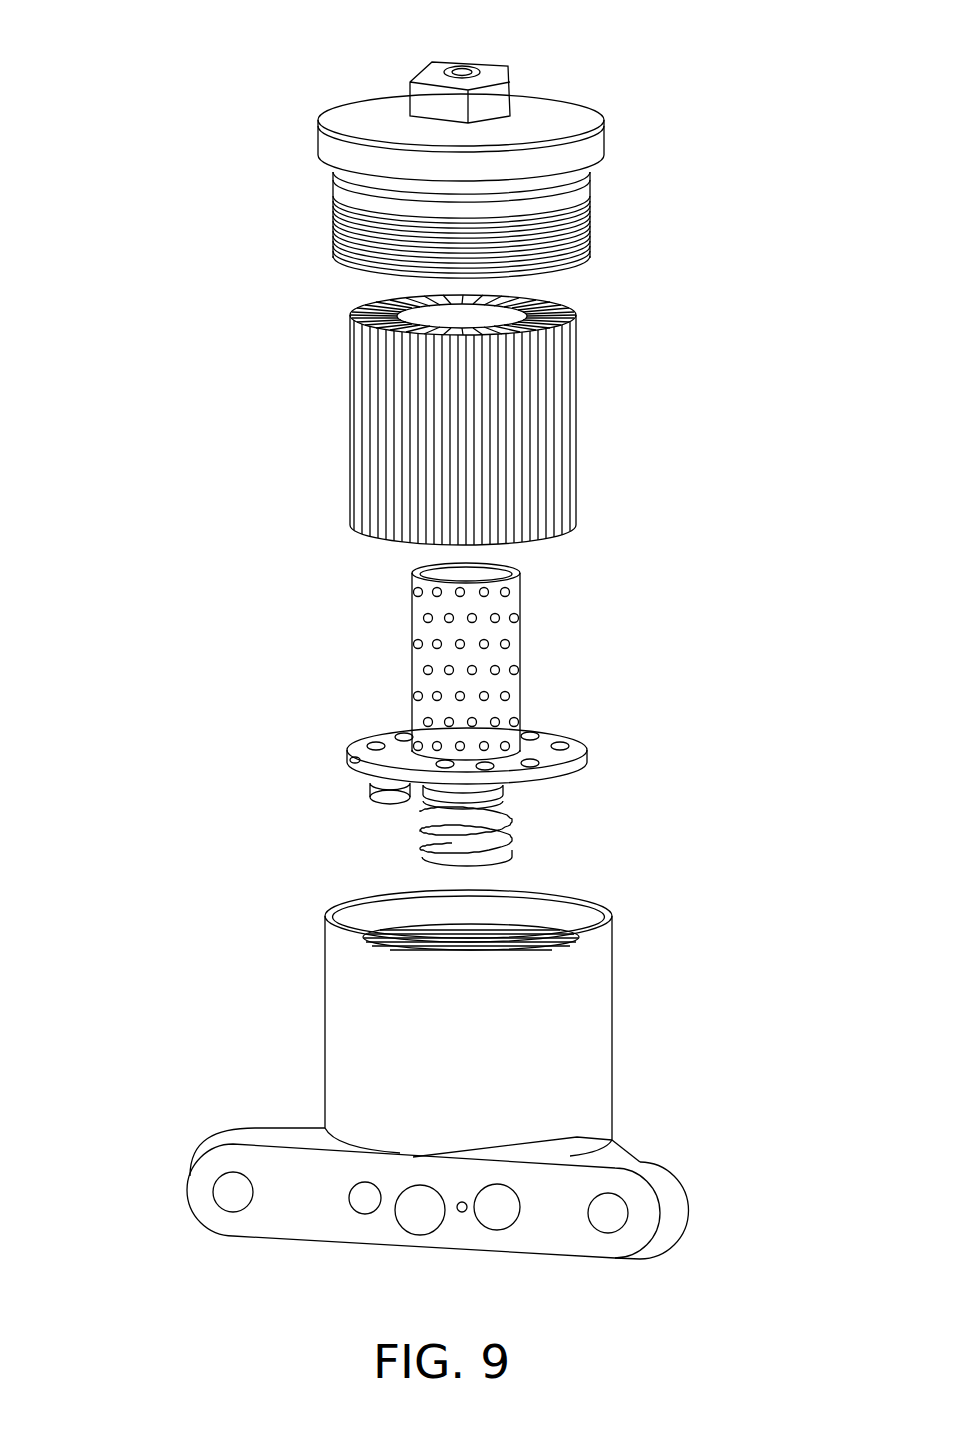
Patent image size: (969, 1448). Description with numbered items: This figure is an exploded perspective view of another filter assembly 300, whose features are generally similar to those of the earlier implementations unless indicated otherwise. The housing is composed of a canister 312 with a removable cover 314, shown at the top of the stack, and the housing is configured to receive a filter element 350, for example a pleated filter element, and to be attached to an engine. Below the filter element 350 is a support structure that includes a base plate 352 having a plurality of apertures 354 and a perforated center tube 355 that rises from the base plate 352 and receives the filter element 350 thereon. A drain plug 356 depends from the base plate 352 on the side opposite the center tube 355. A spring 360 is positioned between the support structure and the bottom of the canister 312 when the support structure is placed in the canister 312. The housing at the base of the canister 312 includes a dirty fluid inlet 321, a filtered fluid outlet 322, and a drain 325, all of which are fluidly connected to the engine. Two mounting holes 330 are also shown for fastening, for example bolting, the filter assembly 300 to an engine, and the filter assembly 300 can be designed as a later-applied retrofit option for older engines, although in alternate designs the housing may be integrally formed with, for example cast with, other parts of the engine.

The filter assembly 300 is at (176, 79).
The removable cover 314 is at (628, 126).
The filter element 350 is at (610, 378).
The perforated center tube 355 is at (517, 652).
The apertures 354 is at (375, 742).
The base plate 352 is at (583, 744).
The drain plug 356 is at (370, 782).
The spring 360 is at (510, 847).
The canister 312 is at (628, 1008).
The mounting holes 330 is at (220, 1197).
The drain 325 is at (342, 1213).
The filtered fluid outlet 322 is at (397, 1231).
The dirty fluid inlet 321 is at (482, 1234).